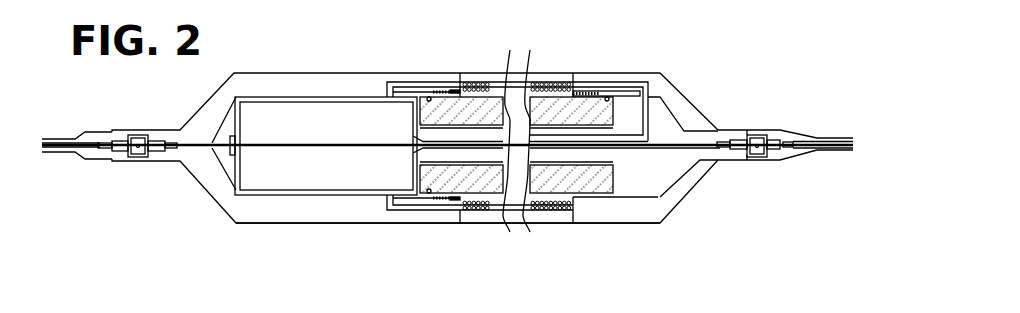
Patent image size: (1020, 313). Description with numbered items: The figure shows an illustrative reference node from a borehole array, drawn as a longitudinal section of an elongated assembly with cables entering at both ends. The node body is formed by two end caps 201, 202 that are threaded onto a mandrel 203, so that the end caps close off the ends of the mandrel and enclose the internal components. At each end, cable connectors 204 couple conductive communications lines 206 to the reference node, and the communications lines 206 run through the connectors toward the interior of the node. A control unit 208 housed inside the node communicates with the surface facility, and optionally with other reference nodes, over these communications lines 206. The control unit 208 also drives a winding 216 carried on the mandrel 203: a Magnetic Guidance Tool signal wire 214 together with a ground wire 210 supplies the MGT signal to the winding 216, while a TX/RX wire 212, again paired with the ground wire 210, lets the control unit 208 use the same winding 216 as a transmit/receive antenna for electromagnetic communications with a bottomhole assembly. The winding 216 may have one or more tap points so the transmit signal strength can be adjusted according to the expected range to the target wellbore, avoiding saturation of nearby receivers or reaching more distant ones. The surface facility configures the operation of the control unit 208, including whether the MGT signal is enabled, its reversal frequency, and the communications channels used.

The end cap 201 is at (306, 223).
The end cap 202 is at (690, 98).
The mandrel 203 is at (575, 187).
The cable connector 204 is at (98, 157).
The conductive communications line 206 is at (197, 147).
The control unit 208 is at (293, 97).
The ground wire 210 is at (622, 87).
The TX/RX wire 212 is at (402, 95).
The MGT signal wire 214 is at (405, 206).
The winding 216 is at (543, 83).